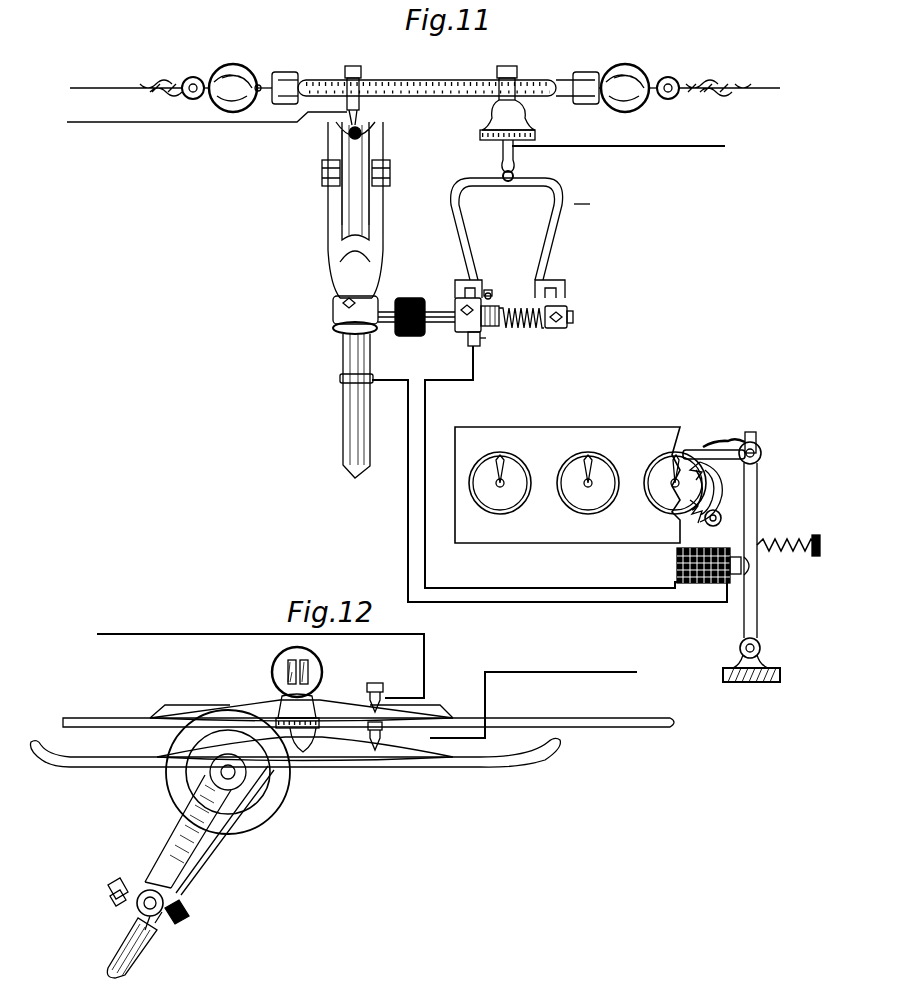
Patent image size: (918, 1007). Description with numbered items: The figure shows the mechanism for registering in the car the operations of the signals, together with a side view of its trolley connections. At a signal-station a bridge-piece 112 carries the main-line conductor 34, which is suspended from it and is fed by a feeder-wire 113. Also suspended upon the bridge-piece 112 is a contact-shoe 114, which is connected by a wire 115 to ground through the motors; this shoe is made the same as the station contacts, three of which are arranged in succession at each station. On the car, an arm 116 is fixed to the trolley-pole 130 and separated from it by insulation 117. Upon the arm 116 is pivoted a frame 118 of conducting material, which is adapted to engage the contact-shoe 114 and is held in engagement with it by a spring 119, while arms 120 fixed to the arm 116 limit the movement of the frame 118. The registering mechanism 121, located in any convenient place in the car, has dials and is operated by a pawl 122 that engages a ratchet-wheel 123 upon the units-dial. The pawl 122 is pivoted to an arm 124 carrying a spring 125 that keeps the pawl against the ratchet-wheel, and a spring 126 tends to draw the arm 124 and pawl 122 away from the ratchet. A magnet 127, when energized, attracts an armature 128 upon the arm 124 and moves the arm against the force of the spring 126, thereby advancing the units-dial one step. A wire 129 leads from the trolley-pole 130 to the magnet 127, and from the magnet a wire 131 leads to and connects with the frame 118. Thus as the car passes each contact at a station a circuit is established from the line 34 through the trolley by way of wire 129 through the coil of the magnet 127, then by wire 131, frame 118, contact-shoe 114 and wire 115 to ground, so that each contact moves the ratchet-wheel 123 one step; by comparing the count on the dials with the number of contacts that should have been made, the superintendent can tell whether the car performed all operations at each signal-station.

In FIG. 11, the main-line conductor 34 is at (340, 138).
In FIG. 12, the main-line conductor 34 is at (368, 733).
In FIG. 11, the bridge-piece 112 is at (436, 80).
In FIG. 11, the feeder-wire 113 is at (179, 133).
In FIG. 12, the feeder-wire 113 is at (187, 640).
In FIG. 11, the contact-shoe 114 is at (512, 168).
In FIG. 12, the contact-shoe 114 is at (322, 750).
In FIG. 11, the wire 115 is at (650, 147).
In FIG. 12, the wire 115 is at (533, 695).
In FIG. 11, the arm 116 is at (452, 300).
In FIG. 11, the insulation 117 is at (408, 337).
In FIG. 11, the frame 118 is at (529, 180).
In FIG. 12, the frame 118 is at (214, 838).
In FIG. 11, the spring 119 is at (532, 307).
In FIG. 11, the arms 120 is at (479, 285).
In FIG. 12, the arms 120 is at (159, 872).
In FIG. 11, the registering mechanism 121 is at (580, 485).
In FIG. 11, the pawl 122 is at (718, 456).
In FIG. 11, the ratchet-wheel 123 is at (712, 475).
In FIG. 11, the arm 124 is at (757, 495).
In FIG. 11, the spring 125 is at (725, 443).
In FIG. 11, the spring 126 is at (790, 542).
In FIG. 11, the magnet 127 is at (707, 585).
In FIG. 11, the armature 128 is at (754, 568).
In FIG. 11, the wire 129 is at (406, 508).
In FIG. 11, the trolley-pole 130 is at (358, 388).
In FIG. 12, the trolley-pole 130 is at (140, 947).
In FIG. 11, the wire 131 is at (489, 590).